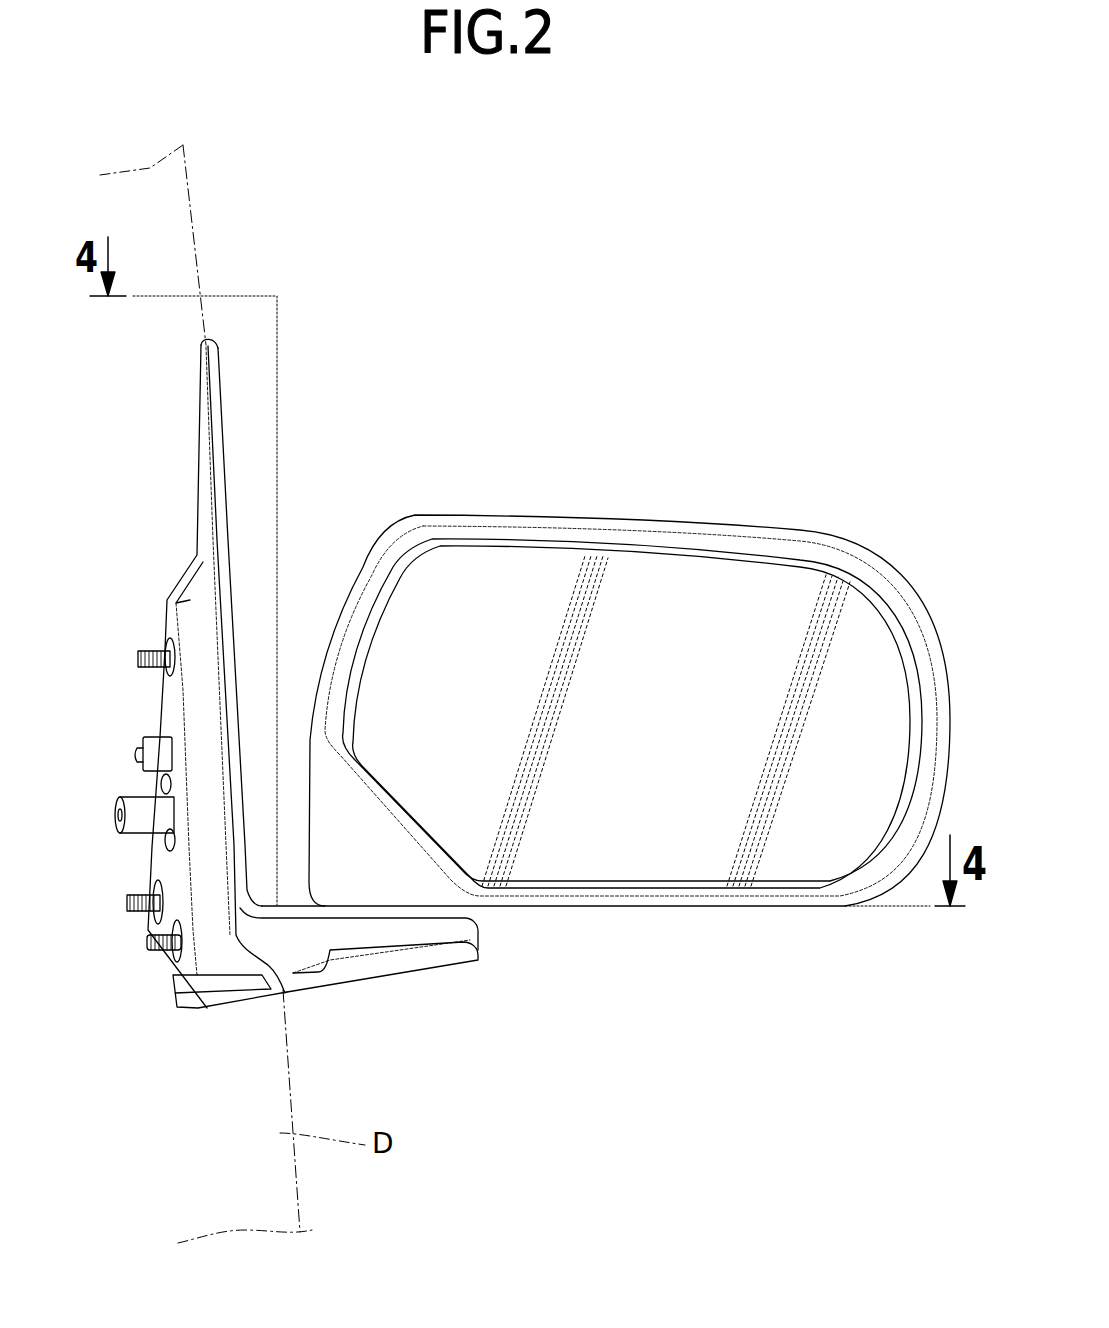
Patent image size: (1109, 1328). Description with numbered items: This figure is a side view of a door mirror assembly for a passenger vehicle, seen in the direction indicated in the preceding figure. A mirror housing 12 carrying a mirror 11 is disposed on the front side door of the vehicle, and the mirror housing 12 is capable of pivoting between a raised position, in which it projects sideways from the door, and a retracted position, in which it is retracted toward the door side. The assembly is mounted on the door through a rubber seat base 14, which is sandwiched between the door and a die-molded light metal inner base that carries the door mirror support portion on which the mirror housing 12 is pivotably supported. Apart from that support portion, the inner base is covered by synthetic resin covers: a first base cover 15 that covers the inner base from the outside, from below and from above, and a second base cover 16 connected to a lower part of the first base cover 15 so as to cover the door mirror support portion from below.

The mirror 11 is at (637, 850).
The mirror housing 12 is at (675, 527).
The rubber seat base 14 is at (189, 600).
The first base cover 15 is at (363, 925).
The second base cover 16 is at (393, 968).